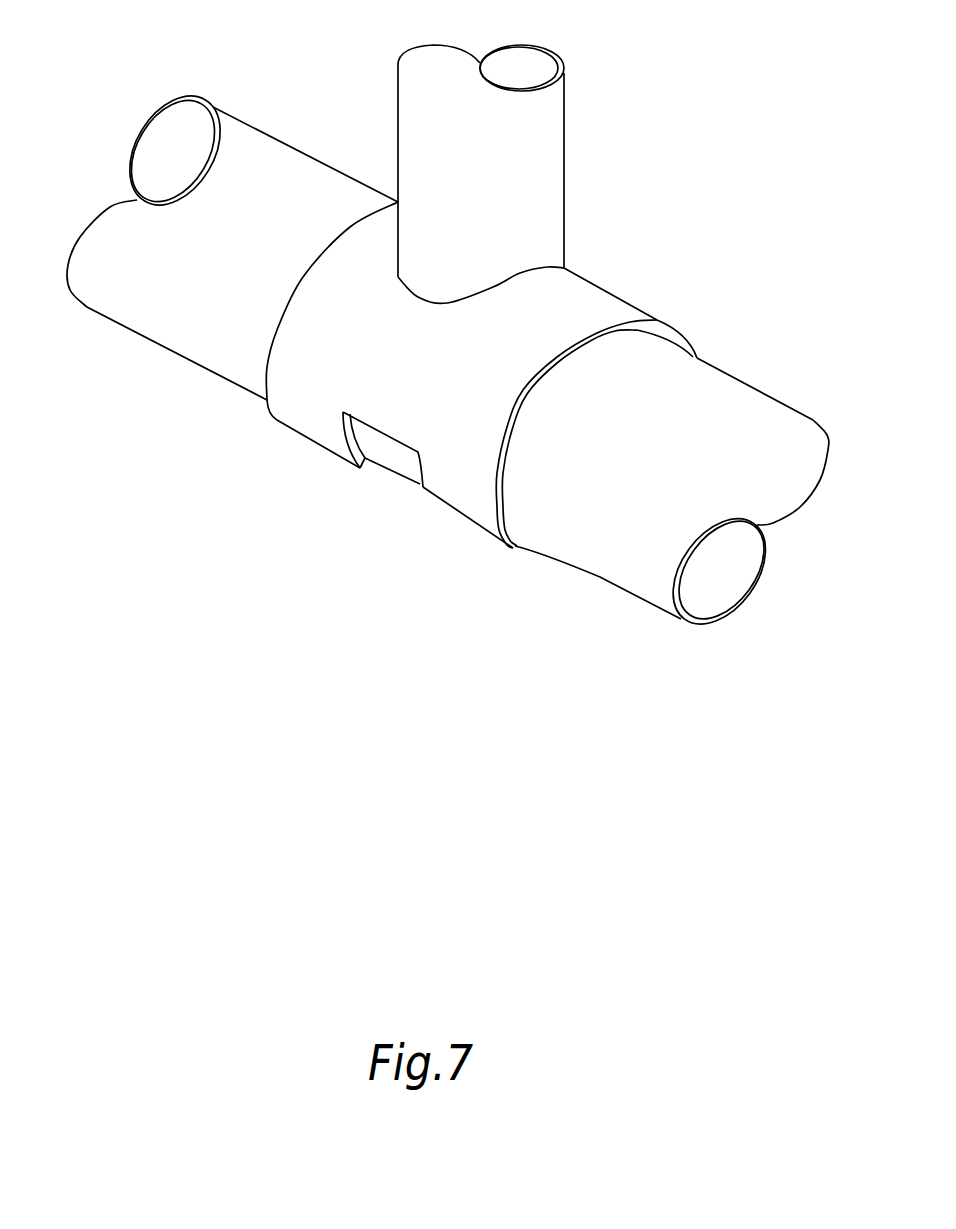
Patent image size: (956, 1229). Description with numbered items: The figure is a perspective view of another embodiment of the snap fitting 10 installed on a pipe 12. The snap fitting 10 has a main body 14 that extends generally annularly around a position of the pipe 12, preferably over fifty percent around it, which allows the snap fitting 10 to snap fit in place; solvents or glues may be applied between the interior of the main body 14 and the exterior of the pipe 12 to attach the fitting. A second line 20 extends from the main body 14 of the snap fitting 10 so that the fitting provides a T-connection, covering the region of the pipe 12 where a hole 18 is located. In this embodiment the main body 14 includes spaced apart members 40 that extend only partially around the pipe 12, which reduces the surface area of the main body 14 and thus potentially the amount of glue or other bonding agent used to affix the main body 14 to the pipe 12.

The snap fitting 10 is at (388, 34).
The pipe 12 is at (733, 377).
The main body 14 is at (623, 301).
The hole 18 is at (413, 296).
The second line 20 is at (564, 105).
The spaced apart members 40 is at (320, 443).